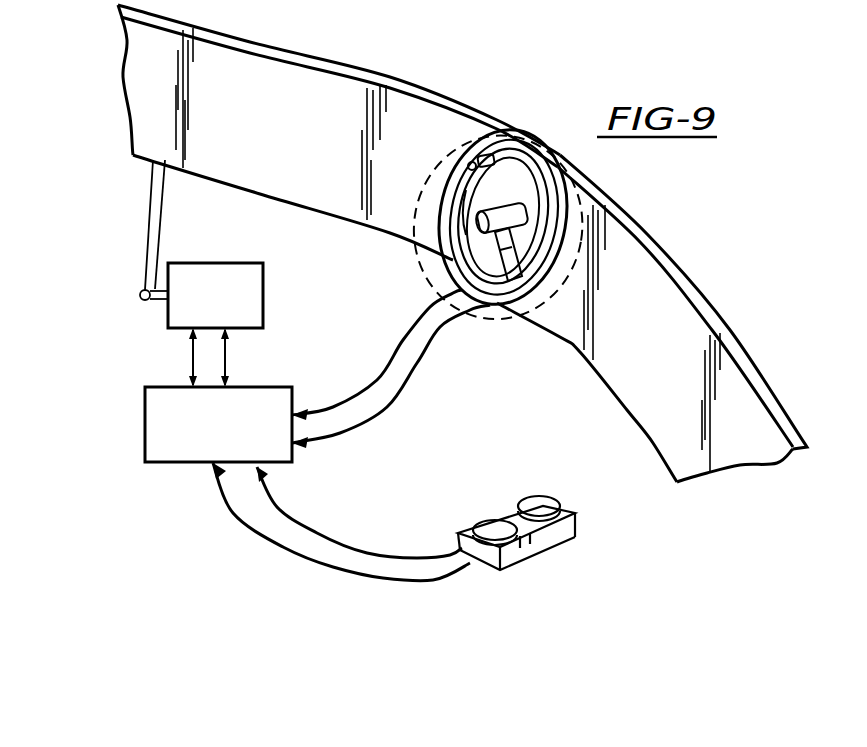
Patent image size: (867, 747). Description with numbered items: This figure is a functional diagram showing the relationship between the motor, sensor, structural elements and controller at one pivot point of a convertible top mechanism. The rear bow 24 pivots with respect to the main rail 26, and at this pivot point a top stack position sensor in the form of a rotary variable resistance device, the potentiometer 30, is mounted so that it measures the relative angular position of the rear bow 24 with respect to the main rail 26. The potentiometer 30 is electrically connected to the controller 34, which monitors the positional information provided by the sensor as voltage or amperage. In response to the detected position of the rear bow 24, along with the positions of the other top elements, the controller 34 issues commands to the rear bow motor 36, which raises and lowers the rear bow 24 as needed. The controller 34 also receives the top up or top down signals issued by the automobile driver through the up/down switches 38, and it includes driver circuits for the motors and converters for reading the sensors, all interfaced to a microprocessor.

The rear bow 24 is at (297, 51).
The main rail 26 is at (650, 235).
The potentiometer 30 is at (500, 312).
The controller 34 is at (145, 423).
The rear bow motor 36 is at (168, 318).
The up/down switches 38 is at (566, 541).